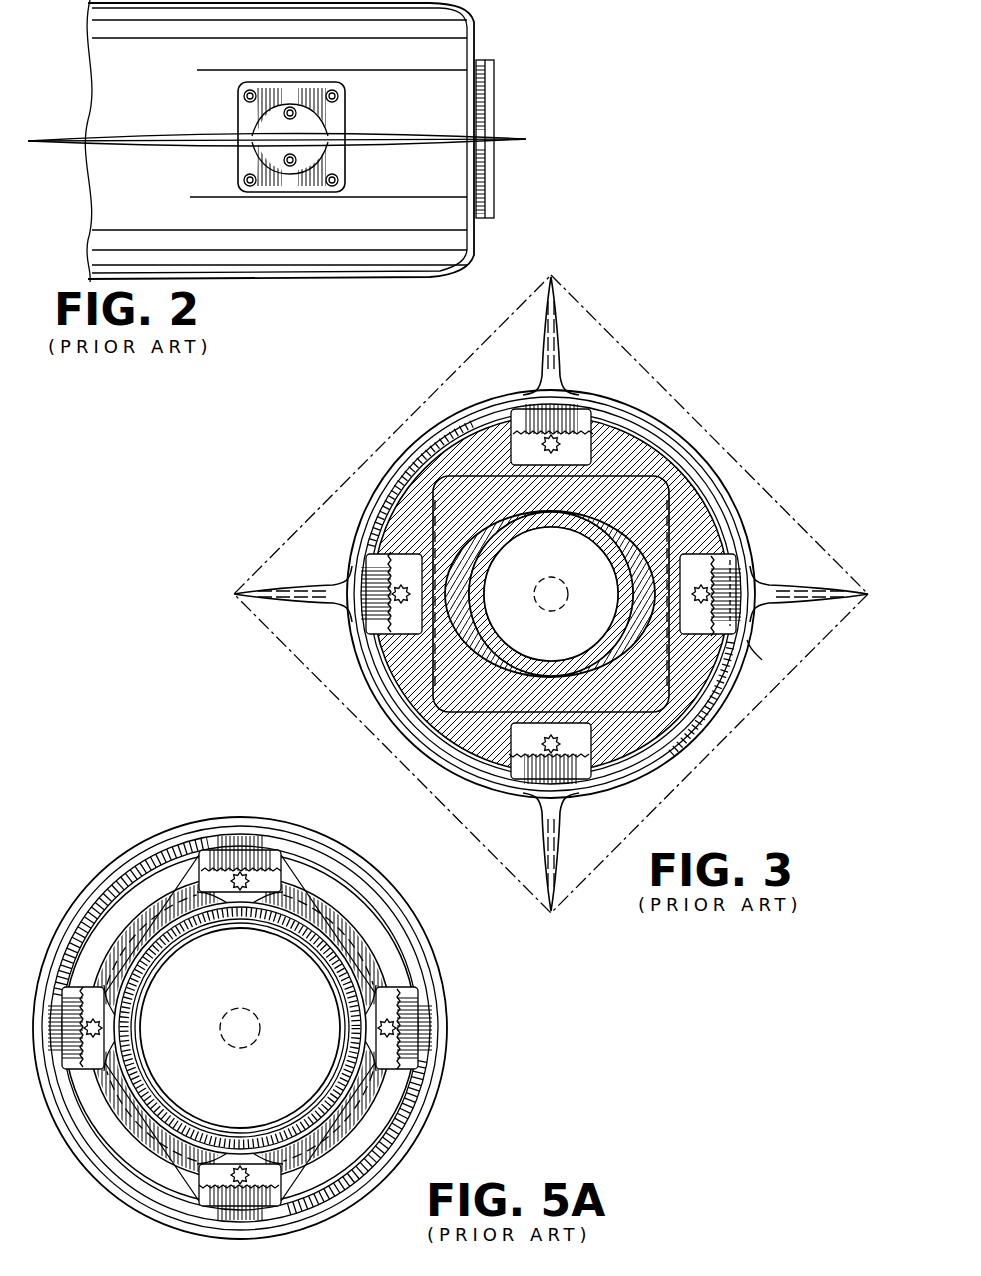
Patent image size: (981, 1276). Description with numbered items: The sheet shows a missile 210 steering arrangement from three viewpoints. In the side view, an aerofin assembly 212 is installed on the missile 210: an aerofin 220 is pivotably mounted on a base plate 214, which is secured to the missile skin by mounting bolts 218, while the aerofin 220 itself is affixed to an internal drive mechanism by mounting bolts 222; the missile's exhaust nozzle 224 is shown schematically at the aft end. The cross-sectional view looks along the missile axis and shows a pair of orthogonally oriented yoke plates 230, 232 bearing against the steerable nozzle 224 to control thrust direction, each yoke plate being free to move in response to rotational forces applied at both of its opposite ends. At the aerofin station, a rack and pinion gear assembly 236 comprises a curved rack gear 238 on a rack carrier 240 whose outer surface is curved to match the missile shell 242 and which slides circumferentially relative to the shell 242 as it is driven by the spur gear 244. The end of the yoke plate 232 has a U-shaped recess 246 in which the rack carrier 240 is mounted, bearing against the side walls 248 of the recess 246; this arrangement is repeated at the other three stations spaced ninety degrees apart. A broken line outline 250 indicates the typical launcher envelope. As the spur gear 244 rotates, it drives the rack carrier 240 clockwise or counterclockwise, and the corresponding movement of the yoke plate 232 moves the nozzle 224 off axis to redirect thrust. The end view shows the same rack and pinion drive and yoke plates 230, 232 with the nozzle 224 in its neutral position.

In FIG. 2, the missile 210 is at (279, 141).
In FIG. 3, the missile 210 is at (432, 768).
In FIG. 2, the aerofin assembly 212 is at (318, 80).
In FIG. 3, the aerofin assembly 212 is at (768, 612).
In FIG. 2, the base plate 214 is at (347, 116).
In FIG. 2, the mounting bolts 218 is at (347, 165).
In FIG. 2, the aerofin 220 is at (214, 108).
In FIG. 3, the aerofin 220 is at (805, 592).
In FIG. 2, the mounting bolts 222 is at (318, 176).
In FIG. 2, the exhaust nozzle 224 is at (495, 57).
In FIG. 3, the exhaust nozzle 224 is at (614, 658).
In FIG. 5A, the exhaust nozzle 224 is at (197, 1093).
In FIG. 3, the yoke plate 230 is at (650, 455).
In FIG. 5A, the yoke plate 230 is at (337, 897).
In FIG. 3, the yoke plate 232 is at (412, 690).
In FIG. 5A, the yoke plate 232 is at (393, 947).
In FIG. 3, the rack and pinion gear assembly 236 is at (695, 628).
In FIG. 5A, the rack and pinion gear assembly 236 is at (252, 858).
In FIG. 3, the curved rack gear 238 is at (718, 546).
In FIG. 3, the rack carrier 240 is at (736, 573).
In FIG. 3, the missile shell 242 is at (762, 660).
In FIG. 3, the spur gear 244 is at (648, 545).
In FIG. 3, the U-shaped recess 246 is at (670, 538).
In FIG. 3, the side walls 248 is at (728, 556).
In FIG. 3, the launcher envelope 250 is at (366, 460).